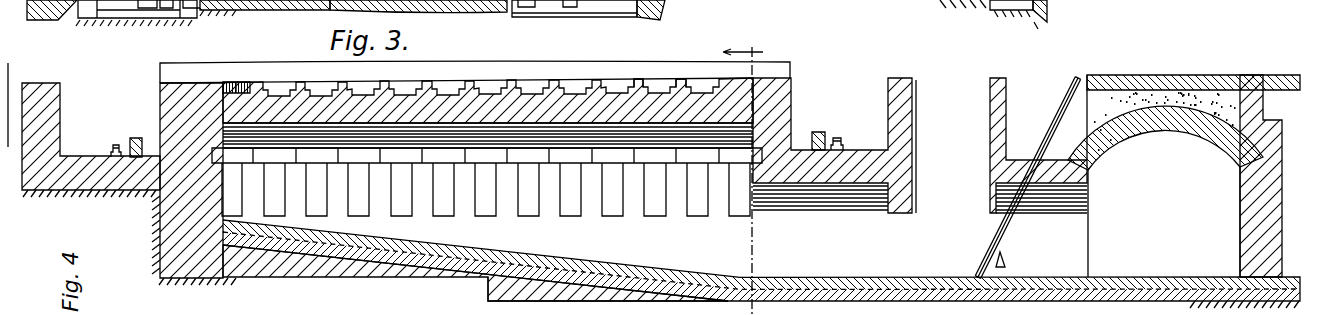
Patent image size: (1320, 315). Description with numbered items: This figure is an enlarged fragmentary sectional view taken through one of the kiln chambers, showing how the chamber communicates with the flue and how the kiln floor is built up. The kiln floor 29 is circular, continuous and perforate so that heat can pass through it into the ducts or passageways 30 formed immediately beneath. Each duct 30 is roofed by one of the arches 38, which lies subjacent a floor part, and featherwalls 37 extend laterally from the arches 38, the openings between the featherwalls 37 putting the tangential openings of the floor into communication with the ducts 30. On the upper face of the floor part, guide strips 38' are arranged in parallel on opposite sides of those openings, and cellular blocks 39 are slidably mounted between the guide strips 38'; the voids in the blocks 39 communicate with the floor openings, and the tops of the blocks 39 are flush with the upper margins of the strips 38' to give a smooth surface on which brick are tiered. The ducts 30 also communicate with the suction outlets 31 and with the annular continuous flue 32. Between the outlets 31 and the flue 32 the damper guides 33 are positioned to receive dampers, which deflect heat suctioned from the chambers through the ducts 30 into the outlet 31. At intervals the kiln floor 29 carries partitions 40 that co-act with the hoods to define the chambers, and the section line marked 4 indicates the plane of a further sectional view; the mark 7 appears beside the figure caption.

The section line 4- 4 is at (743, 173).
The reference mark 7 is at (398, 57).
The kiln floor 29 is at (92, 10).
The ducts or passageways 30 is at (130, 12).
The suction outlets 31 is at (1001, 145).
The annular continuous flue 32 is at (195, 9).
The damper guides 33 is at (1001, 233).
The featherwalls 37 is at (667, 188).
The arches 38 is at (488, 84).
The guide strips 38' is at (659, 61).
The cellular blocks 39 is at (273, 86).
The partitions 40 is at (590, 63).